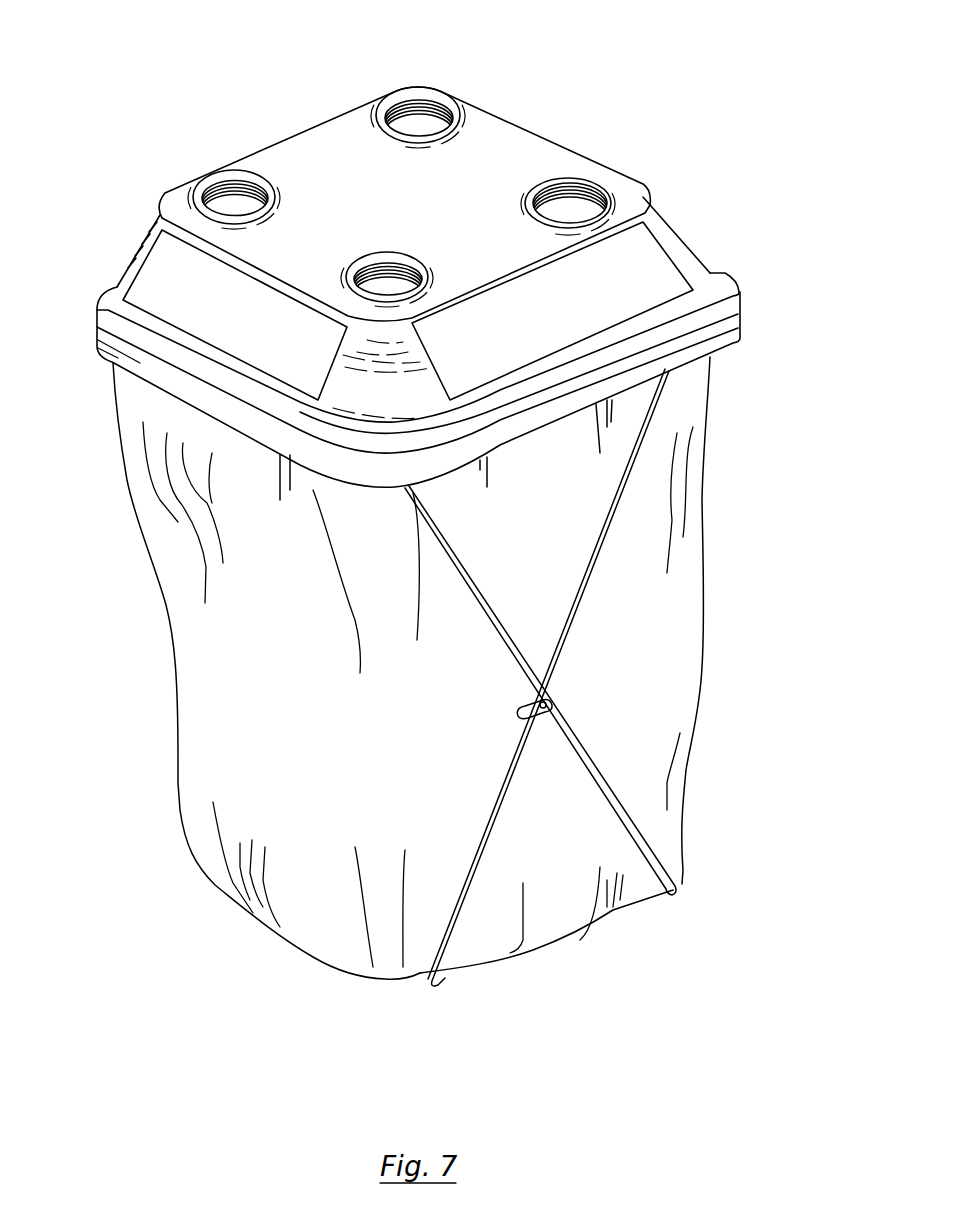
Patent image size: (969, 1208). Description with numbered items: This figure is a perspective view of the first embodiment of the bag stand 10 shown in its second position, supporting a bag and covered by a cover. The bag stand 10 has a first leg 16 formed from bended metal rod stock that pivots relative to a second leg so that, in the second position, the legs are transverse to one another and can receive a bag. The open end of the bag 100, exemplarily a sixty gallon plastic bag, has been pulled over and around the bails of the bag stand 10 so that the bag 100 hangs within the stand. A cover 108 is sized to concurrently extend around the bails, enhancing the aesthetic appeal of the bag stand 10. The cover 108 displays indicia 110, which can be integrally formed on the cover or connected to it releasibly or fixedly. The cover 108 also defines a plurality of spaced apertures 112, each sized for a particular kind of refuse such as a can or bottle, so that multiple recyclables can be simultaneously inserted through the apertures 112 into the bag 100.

The bag stand 10 is at (817, 313).
The first leg 16 is at (767, 417).
The bag 100 is at (197, 780).
The cover 108 is at (303, 160).
The indicia 110 is at (620, 277).
The aperture 112 is at (227, 197).